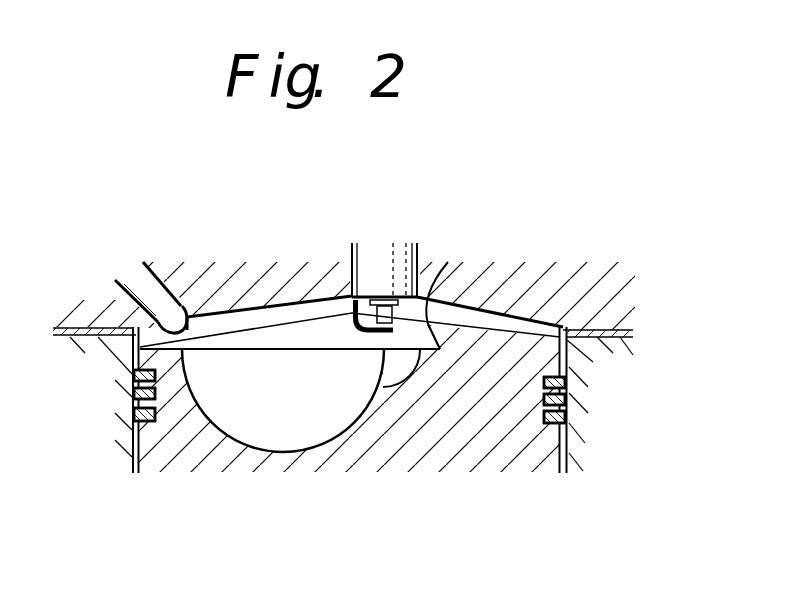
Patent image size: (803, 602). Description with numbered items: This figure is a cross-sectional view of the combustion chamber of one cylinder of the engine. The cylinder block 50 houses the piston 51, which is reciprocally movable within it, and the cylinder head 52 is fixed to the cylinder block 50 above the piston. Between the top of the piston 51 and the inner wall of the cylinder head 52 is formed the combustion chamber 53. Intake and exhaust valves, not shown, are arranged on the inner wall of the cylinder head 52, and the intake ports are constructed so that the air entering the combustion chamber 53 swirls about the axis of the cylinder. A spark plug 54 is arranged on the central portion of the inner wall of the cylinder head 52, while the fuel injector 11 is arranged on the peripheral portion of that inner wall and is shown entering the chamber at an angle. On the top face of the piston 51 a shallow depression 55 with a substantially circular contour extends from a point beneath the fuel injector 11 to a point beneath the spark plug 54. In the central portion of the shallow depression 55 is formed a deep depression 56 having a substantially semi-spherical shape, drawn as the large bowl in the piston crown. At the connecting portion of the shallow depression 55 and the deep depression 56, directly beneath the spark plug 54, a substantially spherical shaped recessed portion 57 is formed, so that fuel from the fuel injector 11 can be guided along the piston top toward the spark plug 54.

The fuel injector 11 is at (128, 278).
The cylinder block 50 is at (575, 458).
The piston 51 is at (541, 429).
The cylinder head 52 is at (562, 307).
The combustion chamber 53 is at (262, 310).
The spark plug 54 is at (386, 255).
The shallow depression 55 is at (448, 262).
The deep depression 56 is at (253, 442).
The recessed portion 57 is at (409, 380).